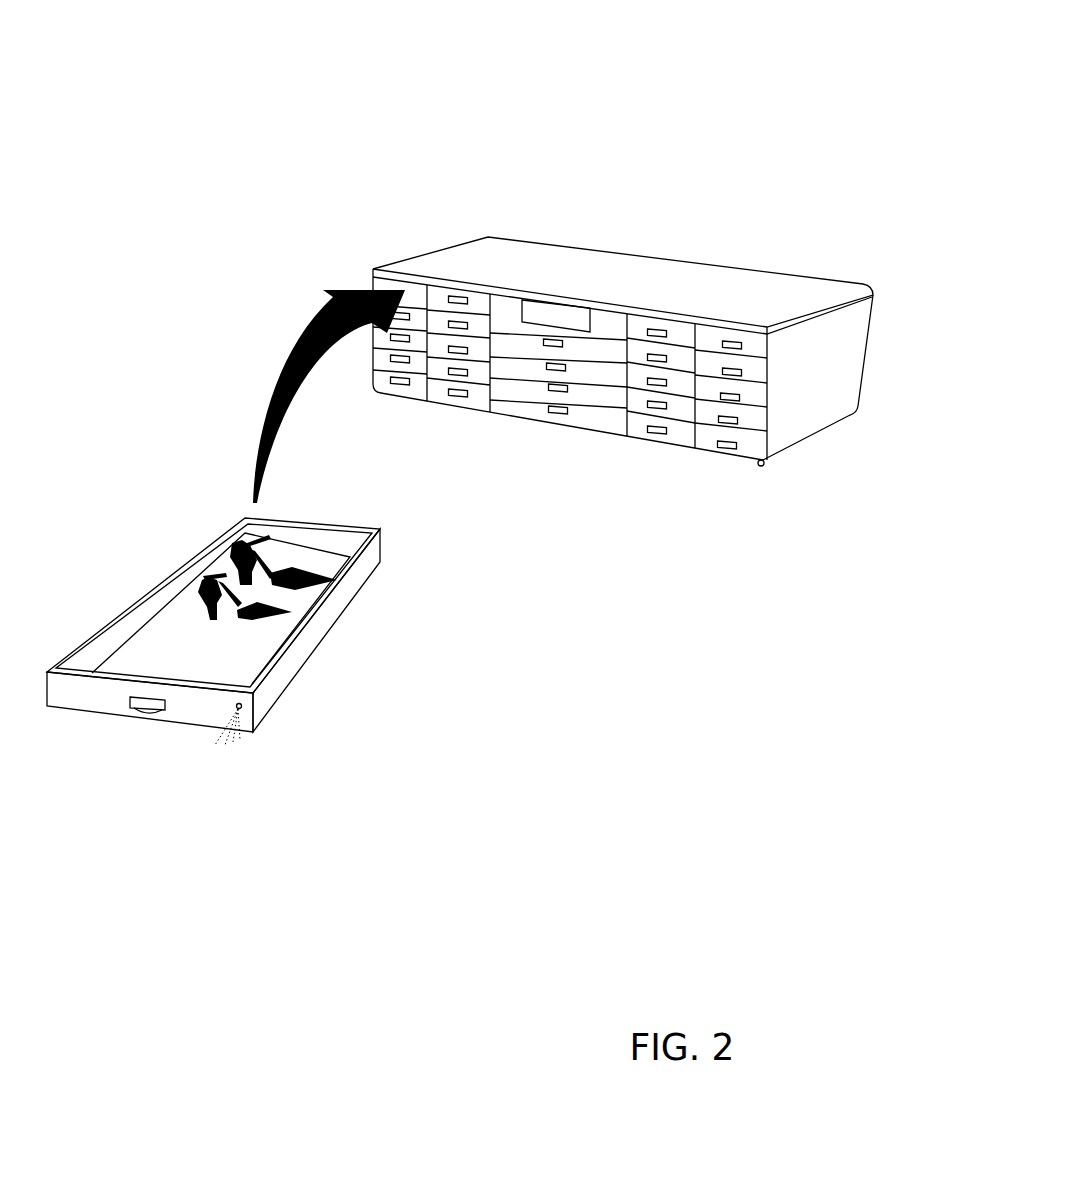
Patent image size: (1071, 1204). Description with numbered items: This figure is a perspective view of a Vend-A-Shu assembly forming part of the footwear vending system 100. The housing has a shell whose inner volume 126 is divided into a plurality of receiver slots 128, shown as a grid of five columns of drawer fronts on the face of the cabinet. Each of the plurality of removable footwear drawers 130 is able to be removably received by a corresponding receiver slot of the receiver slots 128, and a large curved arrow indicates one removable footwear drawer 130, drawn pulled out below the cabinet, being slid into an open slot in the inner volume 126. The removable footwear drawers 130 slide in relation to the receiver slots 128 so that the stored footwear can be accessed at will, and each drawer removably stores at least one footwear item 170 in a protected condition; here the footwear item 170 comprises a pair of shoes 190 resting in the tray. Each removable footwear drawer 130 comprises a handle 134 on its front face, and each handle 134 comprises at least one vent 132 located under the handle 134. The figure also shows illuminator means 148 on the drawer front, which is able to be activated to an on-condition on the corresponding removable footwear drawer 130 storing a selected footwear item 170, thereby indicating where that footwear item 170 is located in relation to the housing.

The footwear vending system 100 is at (616, 100).
The inner volume 126 is at (417, 287).
The receiver slots 128 is at (364, 278).
The removable footwear drawers 130 is at (330, 510).
The vent 132 is at (156, 724).
The handle 134 is at (116, 690).
The illuminator means 148 is at (252, 705).
The footwear item 170 is at (186, 587).
The shoes 190 is at (345, 580).